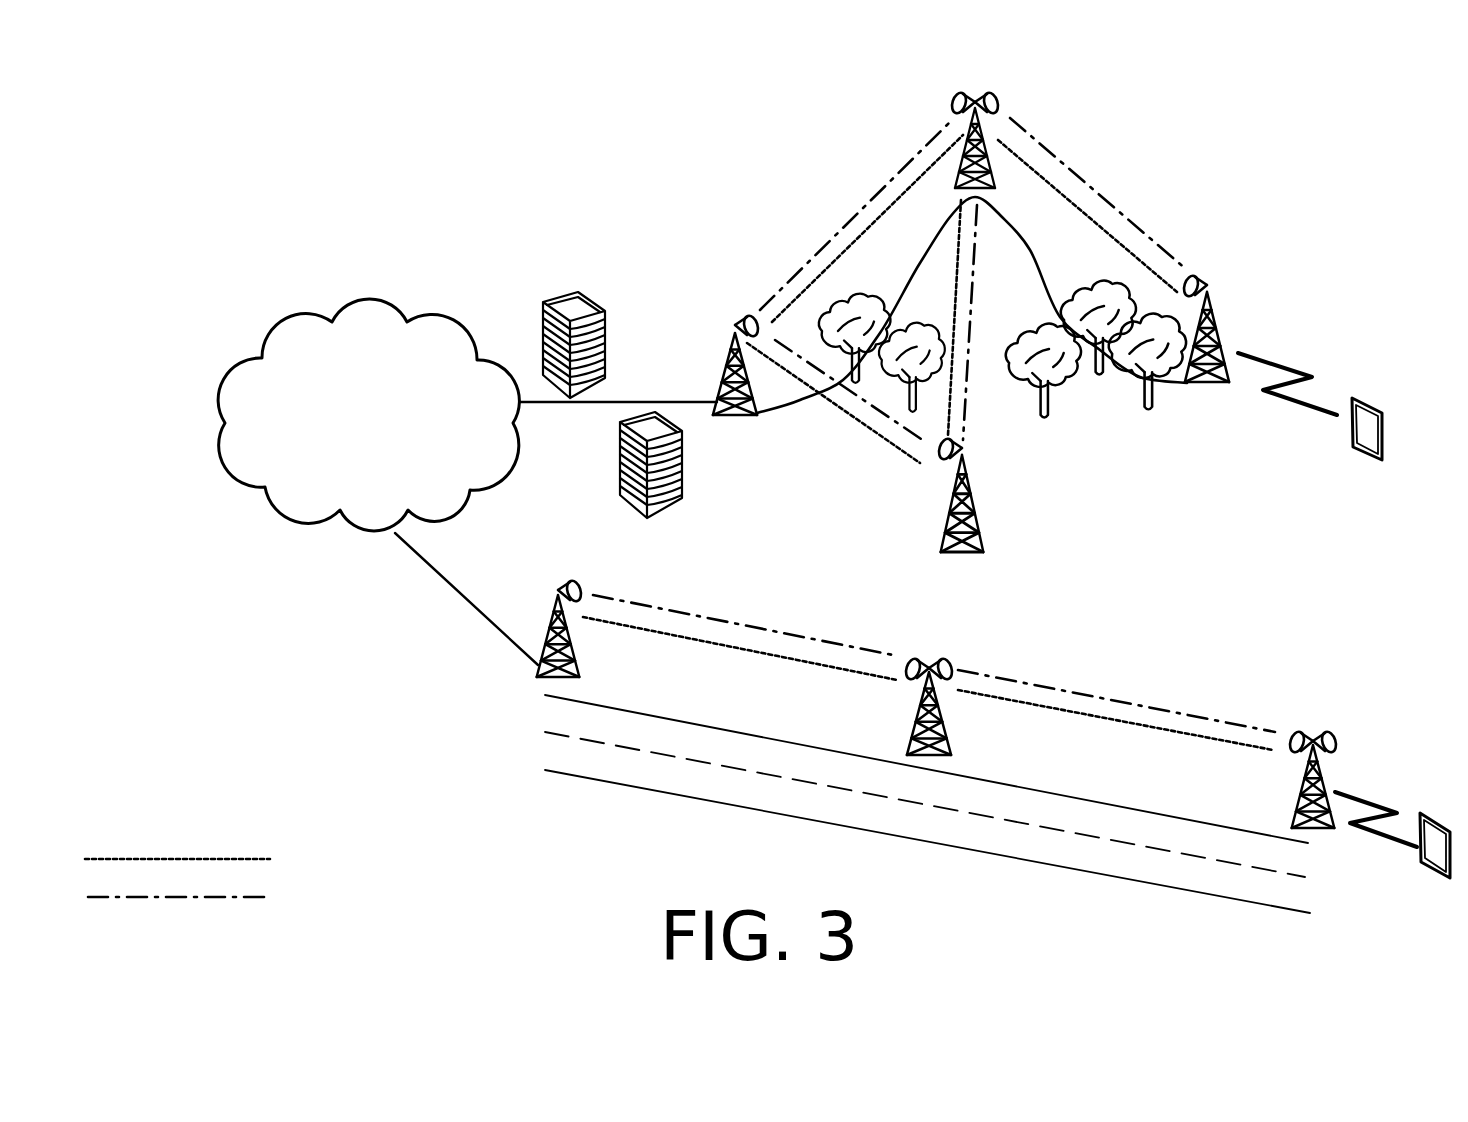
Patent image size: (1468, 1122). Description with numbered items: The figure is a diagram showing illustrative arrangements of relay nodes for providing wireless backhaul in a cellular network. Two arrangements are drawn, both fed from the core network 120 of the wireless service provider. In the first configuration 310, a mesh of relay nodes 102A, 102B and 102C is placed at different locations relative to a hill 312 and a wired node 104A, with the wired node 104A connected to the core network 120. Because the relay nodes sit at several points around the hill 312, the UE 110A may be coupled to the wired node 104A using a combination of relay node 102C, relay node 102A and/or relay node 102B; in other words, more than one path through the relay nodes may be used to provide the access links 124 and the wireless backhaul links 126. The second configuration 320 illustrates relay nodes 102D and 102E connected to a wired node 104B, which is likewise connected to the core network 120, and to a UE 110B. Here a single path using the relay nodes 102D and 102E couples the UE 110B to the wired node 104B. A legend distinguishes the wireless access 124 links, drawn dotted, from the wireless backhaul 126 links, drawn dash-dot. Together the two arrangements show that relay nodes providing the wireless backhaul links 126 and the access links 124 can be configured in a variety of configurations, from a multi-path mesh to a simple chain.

The relay node 102A is at (968, 110).
The relay node 102B is at (966, 457).
The relay node 102C is at (1212, 293).
The relay node 102D is at (929, 660).
The relay node 102E is at (1318, 742).
The wired node 104A is at (733, 331).
The wired node 104B is at (557, 596).
The UE 110A is at (1365, 452).
The UE 110B is at (1430, 871).
The core network 120 is at (348, 457).
The access links 124 is at (540, 876).
The wireless backhaul links 126 is at (540, 909).
The first configuration 310 is at (496, 240).
The hill 312 is at (922, 214).
The second configuration 320 is at (463, 678).